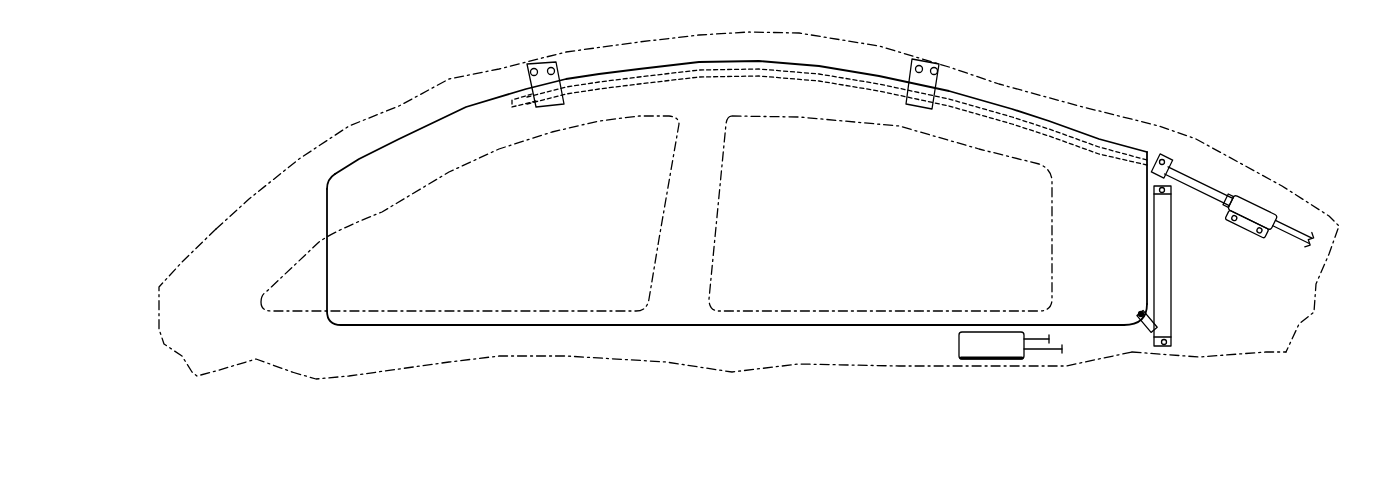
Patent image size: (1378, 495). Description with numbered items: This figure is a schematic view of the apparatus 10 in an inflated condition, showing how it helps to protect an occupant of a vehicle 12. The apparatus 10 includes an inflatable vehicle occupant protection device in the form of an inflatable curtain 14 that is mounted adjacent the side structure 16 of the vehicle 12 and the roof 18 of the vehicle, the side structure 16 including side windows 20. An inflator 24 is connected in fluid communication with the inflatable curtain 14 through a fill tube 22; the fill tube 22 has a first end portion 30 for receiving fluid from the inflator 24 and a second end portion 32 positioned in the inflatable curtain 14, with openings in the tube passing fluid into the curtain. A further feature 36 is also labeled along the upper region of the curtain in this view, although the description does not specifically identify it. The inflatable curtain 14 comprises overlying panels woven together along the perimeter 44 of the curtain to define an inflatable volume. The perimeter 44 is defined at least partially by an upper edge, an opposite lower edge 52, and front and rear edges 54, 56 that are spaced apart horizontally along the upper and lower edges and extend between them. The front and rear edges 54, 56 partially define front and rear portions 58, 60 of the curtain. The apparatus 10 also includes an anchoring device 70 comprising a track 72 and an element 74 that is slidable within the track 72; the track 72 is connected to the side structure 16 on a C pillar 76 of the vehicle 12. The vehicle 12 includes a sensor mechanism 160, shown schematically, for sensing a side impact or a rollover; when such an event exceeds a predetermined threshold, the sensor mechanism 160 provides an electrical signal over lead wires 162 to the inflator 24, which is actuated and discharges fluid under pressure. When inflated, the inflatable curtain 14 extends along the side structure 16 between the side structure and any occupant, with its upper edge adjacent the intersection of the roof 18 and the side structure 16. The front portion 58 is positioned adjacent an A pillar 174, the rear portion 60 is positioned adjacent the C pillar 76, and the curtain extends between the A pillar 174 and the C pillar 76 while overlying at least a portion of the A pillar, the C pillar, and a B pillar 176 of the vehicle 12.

The apparatus 10 is at (443, 48).
The vehicle 12 is at (377, 135).
The inflatable curtain 14 is at (408, 278).
The side structure 16 is at (737, 353).
The roof 18 is at (890, 50).
The side windows 20 is at (593, 302).
The fill tube 22 is at (1175, 157).
The inflator 24 is at (1262, 200).
The first end portion 30 is at (1207, 190).
The second end portion 32 is at (607, 83).
The panel edge seal 36 is at (710, 62).
The perimeter 44 is at (328, 285).
The lower edge 52 is at (695, 327).
The front edge 54 is at (325, 213).
The rear edge 56 is at (1150, 222).
The front portion 58 is at (353, 288).
The rear portion 60 is at (1113, 230).
The anchoring device 70 is at (1199, 240).
The track 72 is at (1167, 265).
The element 74 is at (1152, 337).
The C pillar 76 is at (1200, 313).
The sensor mechanism 160 is at (993, 348).
The lead wires 162 is at (1297, 222).
The A pillar 174 is at (277, 228).
The B pillar 176 is at (700, 187).